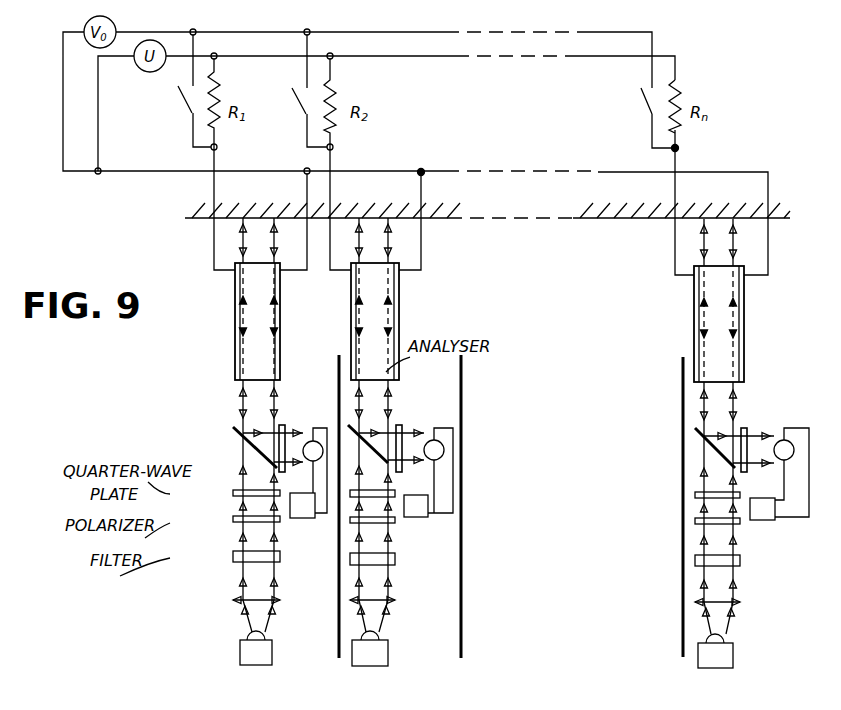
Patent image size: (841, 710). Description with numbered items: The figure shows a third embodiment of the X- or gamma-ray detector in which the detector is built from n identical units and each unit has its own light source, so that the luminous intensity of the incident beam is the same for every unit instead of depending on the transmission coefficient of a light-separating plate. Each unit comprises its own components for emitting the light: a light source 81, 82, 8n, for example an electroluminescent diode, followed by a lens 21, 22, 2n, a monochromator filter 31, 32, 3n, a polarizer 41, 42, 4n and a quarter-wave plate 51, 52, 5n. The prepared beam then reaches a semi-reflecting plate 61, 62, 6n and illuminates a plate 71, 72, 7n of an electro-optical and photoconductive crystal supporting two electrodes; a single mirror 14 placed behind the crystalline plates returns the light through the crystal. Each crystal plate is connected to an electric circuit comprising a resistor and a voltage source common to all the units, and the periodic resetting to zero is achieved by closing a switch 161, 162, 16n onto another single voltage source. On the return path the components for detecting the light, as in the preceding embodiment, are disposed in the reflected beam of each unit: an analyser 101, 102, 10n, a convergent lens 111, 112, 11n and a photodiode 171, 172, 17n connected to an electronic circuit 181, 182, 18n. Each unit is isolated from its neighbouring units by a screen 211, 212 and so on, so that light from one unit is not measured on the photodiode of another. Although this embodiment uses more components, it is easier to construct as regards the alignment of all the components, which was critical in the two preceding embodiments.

The mirror 14 is at (196, 218).
The switch 161 is at (184, 100).
The switch 162 is at (298, 102).
The switch 16n is at (645, 103).
The plate of electro-optical and photoconductive crystal 71 is at (258, 336).
The plate of electro-optical and photoconductive crystal 72 is at (373, 272).
The plate of electro-optical and photoconductive crystal 7n is at (718, 318).
The screen 211 is at (339, 358).
The screen 212 is at (463, 383).
The semi-reflecting plate 61 is at (241, 432).
The semi-reflecting plate 62 is at (348, 426).
The semi-reflecting plate 6n is at (695, 436).
The analyser 101 is at (282, 425).
The analyser 102 is at (399, 425).
The analyser 10n is at (744, 427).
The convergent lens 111 is at (298, 431).
The convergent lens 112 is at (412, 431).
The convergent lens 11n is at (761, 432).
The photodiode 171 is at (306, 466).
The photodiode 172 is at (444, 447).
The photodiode 17n is at (783, 440).
The electronic circuit 181 is at (320, 520).
The electronic circuit 182 is at (454, 507).
The electronic circuit 18n is at (763, 513).
The quarter-wave plate 51 is at (232, 494).
The quarter-wave plate 52 is at (396, 491).
The quarter-wave plate 5n is at (694, 495).
The polarizer 41 is at (232, 521).
The polarizer 42 is at (396, 521).
The polarizer 4n is at (694, 522).
The monochromator filter 31 is at (232, 557).
The monochromator filter 32 is at (396, 558).
The monochromator filter 3n is at (694, 561).
The lens 21 is at (232, 600).
The lens 22 is at (397, 601).
The lens 2n is at (741, 603).
The light source 81 is at (247, 633).
The light source 82 is at (379, 635).
The light source 8n is at (734, 661).